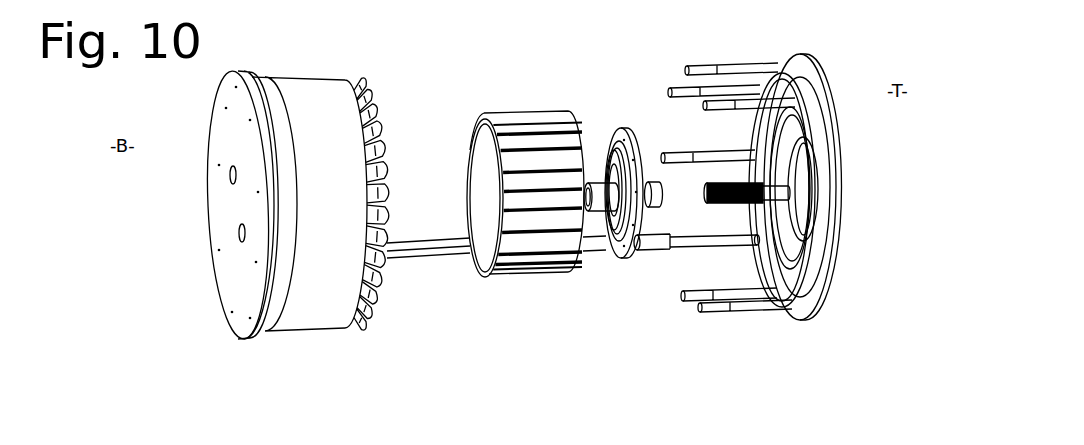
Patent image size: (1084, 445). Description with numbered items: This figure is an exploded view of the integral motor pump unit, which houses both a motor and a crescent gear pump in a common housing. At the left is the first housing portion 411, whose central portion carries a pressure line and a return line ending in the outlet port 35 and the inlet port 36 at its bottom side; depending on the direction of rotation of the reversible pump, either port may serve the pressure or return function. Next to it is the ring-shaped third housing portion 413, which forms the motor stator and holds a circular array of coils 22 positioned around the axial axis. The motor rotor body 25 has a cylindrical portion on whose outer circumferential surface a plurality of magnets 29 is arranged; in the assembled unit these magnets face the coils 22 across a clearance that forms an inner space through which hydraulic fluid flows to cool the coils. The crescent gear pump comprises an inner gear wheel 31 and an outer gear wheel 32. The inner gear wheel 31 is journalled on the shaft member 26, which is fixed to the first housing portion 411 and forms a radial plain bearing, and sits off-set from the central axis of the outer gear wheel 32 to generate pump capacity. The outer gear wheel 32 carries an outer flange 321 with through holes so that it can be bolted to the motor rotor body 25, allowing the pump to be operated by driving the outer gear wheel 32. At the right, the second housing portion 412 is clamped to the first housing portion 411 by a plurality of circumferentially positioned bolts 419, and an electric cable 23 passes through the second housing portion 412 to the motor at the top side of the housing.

The first housing portion 411 is at (274, 315).
The third housing portion 413 is at (333, 288).
The outlet port 35 is at (230, 176).
The inlet port 36 is at (240, 233).
The coils 22 is at (393, 268).
The motor rotor body 25 is at (479, 122).
The magnets 29 is at (540, 245).
The shaft member 26 is at (603, 190).
The outer flange 321 is at (614, 130).
The outer gear wheel 32 is at (640, 265).
The inner gear wheel 31 is at (607, 237).
The electric cable 23 is at (655, 253).
The second housing portion 412 is at (810, 300).
The bolts 419 is at (765, 306).